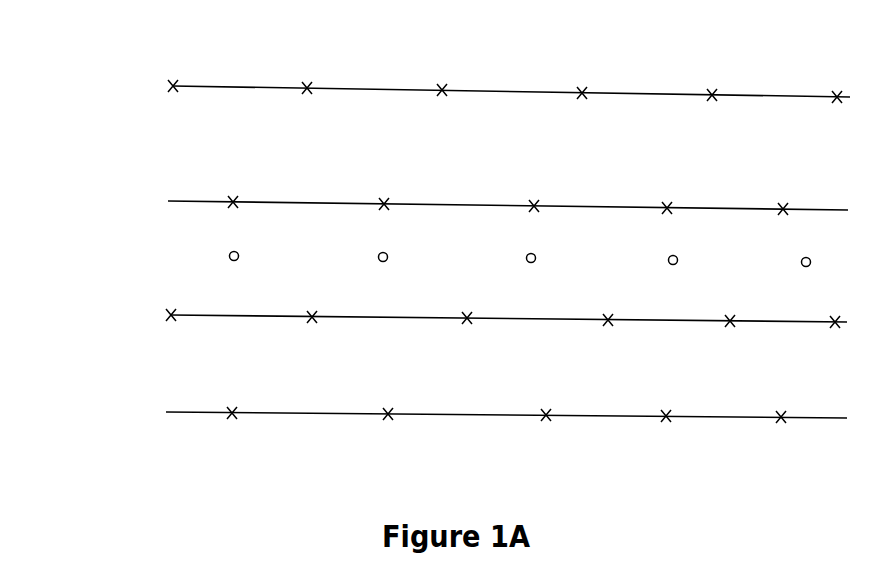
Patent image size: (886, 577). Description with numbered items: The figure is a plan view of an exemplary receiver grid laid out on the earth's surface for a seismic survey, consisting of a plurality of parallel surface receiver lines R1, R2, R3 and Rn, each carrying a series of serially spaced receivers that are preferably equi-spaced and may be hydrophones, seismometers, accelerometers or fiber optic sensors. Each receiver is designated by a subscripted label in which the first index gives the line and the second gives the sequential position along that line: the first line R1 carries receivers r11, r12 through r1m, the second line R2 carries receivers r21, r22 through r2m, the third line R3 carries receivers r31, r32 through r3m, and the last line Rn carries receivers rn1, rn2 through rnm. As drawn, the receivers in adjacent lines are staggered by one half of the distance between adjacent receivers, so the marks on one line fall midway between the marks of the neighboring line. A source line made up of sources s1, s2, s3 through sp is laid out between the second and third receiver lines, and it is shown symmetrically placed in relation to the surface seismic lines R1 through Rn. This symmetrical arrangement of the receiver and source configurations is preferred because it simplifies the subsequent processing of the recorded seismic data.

The receiver line R1 is at (441, 76).
The receiver line R2 is at (440, 192).
The receiver line R3 is at (440, 305).
The receiver line Rn is at (440, 404).
The receiver r11 is at (195, 54).
The receiver r12 is at (322, 55).
The receiver r1m is at (856, 67).
The receiver r21 is at (232, 180).
The receiver r22 is at (390, 181).
The receiver r2m is at (821, 187).
The receiver r31 is at (186, 294).
The receiver r32 is at (313, 295).
The receiver r3m is at (851, 301).
The receiver rn1 is at (219, 390).
The receiver rn2 is at (389, 390).
The receiver rnm is at (816, 394).
The source s1 is at (242, 238).
The source s2 is at (395, 240).
The source s3 is at (530, 241).
The source sp is at (818, 246).